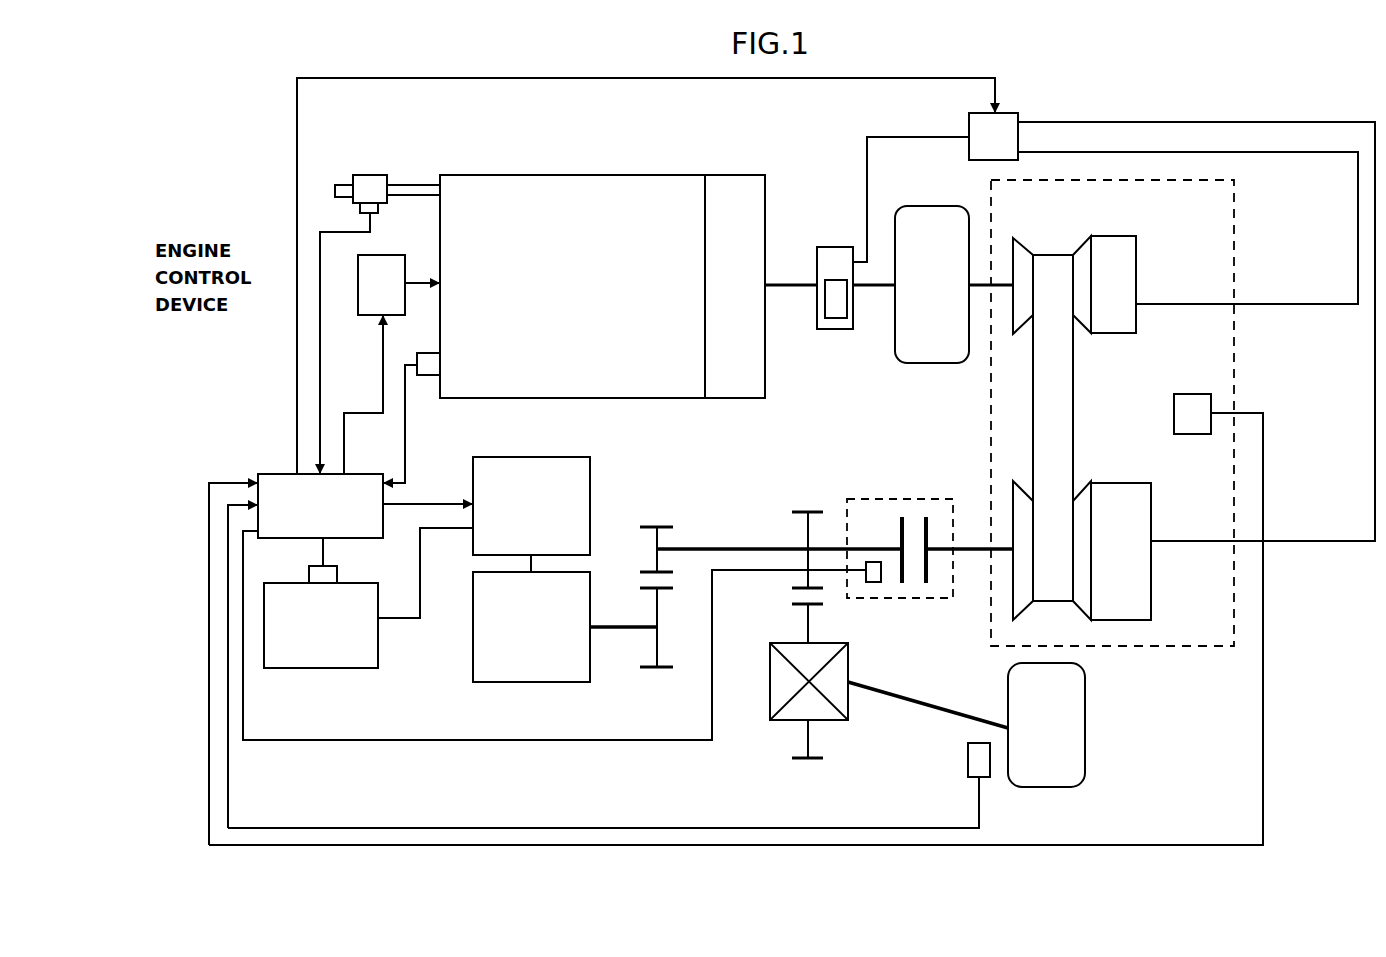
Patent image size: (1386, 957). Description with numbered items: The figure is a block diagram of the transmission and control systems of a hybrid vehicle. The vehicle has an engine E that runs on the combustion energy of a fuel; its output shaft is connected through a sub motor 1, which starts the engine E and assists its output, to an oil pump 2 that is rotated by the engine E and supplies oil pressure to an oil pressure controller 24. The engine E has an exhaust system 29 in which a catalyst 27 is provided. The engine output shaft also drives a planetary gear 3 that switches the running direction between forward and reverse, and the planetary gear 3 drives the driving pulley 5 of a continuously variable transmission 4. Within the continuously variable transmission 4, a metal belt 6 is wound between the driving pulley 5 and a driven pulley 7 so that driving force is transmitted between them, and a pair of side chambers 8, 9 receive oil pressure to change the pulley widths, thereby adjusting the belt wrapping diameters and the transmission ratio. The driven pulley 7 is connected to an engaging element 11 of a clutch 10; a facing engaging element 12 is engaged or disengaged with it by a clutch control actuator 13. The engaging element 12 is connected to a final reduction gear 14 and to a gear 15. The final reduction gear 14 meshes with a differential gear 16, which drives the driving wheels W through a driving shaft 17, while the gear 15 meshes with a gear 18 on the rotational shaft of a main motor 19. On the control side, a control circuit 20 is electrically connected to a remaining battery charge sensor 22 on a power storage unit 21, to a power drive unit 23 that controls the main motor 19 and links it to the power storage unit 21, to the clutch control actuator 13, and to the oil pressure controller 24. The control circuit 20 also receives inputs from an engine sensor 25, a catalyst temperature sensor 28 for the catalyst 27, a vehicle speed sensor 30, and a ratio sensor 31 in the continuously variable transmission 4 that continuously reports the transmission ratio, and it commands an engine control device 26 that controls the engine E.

The sub motor 1 is at (735, 175).
The engine E is at (555, 175).
The oil pump 2 is at (832, 247).
The planetary gear 3 is at (935, 206).
The continuously variable transmission 4 is at (1234, 217).
The driving pulley 5 is at (1018, 250).
The metal belt 6 is at (1073, 398).
The driven pulley 7 is at (1018, 495).
The side chamber 8 is at (1136, 265).
The side chamber 9 is at (1151, 510).
The clutch 10 is at (890, 498).
The engaging element 11 is at (927, 583).
The engaging element 12 is at (902, 583).
The clutch control actuator 13 is at (872, 583).
The final reduction gear 14 is at (805, 530).
The gear 15 is at (655, 540).
The differential gear 16 is at (778, 720).
The driving shaft 17 is at (893, 700).
The gear 18 is at (655, 637).
The main motor 19 is at (527, 682).
The control circuit 20 is at (283, 474).
The power storage unit 21 is at (322, 668).
The remaining battery charge sensor 22 is at (340, 577).
The power drive unit 23 is at (520, 457).
The oil pressure controller 24 is at (1000, 113).
The engine sensor 25 is at (428, 375).
The engine control device 26 is at (368, 295).
The catalyst 27 is at (370, 175).
The catalyst temperature sensor 28 is at (378, 207).
The exhaust system 29 is at (348, 185).
The vehicle speed sensor 30 is at (968, 760).
The ratio sensor 31 is at (1188, 394).
The driving wheels W is at (1085, 722).